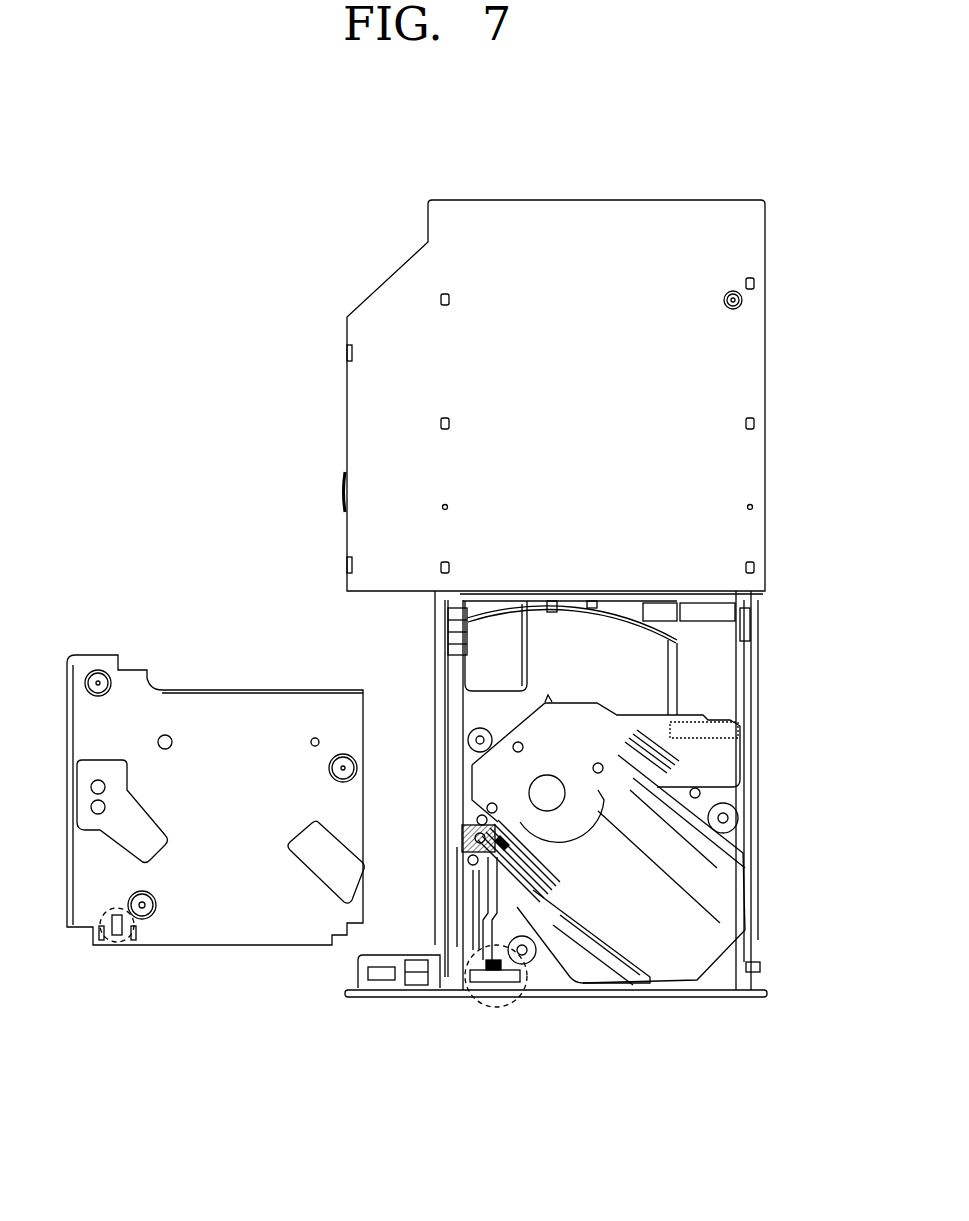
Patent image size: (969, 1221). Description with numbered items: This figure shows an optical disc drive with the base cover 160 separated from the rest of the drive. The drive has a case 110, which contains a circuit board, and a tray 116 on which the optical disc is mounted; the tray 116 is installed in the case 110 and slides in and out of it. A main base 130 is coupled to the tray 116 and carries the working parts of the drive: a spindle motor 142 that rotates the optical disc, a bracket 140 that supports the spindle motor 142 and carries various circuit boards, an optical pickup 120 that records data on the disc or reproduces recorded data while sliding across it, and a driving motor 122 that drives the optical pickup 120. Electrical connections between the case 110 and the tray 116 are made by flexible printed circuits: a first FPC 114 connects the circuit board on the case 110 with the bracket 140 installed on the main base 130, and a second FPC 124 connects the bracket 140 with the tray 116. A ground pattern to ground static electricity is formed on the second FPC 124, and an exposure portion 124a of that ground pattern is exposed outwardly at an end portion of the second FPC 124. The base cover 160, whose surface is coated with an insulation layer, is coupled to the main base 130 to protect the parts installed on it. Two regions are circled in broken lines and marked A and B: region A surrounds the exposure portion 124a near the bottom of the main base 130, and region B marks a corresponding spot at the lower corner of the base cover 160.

The case 110 is at (748, 358).
The first FPC 114 is at (723, 665).
The tray 116 is at (547, 658).
The optical pickup 120 is at (633, 895).
The driving motor 122 is at (542, 960).
The second FPC 124 is at (485, 928).
The exposure portion 124a is at (488, 975).
The main base 130 is at (742, 930).
The bracket 140 is at (728, 767).
The spindle motor 142 is at (552, 797).
The base cover 160 is at (220, 940).
The region A is at (502, 1008).
The region B is at (117, 950).